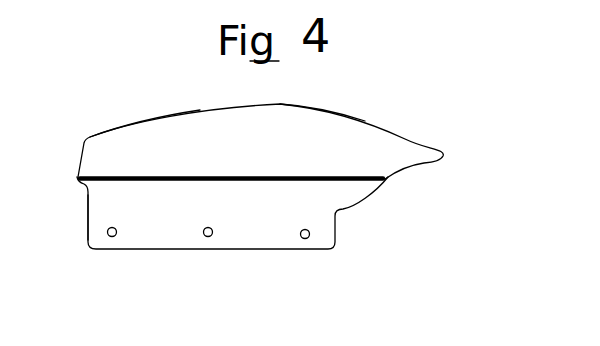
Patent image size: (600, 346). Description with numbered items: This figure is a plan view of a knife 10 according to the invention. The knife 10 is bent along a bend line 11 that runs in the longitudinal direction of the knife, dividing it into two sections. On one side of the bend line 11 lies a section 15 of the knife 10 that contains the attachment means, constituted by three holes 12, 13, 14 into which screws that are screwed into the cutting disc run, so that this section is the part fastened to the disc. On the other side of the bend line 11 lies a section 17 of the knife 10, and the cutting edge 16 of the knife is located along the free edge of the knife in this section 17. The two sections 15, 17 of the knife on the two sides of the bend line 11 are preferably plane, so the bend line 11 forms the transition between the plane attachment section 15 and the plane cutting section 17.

The knife 10 is at (407, 143).
The bend line 11 is at (333, 182).
The hole 12 is at (112, 237).
The hole 13 is at (208, 237).
The hole 14 is at (305, 239).
The section 15 is at (115, 196).
The cutting edge 16 is at (128, 123).
The section 17 is at (320, 140).